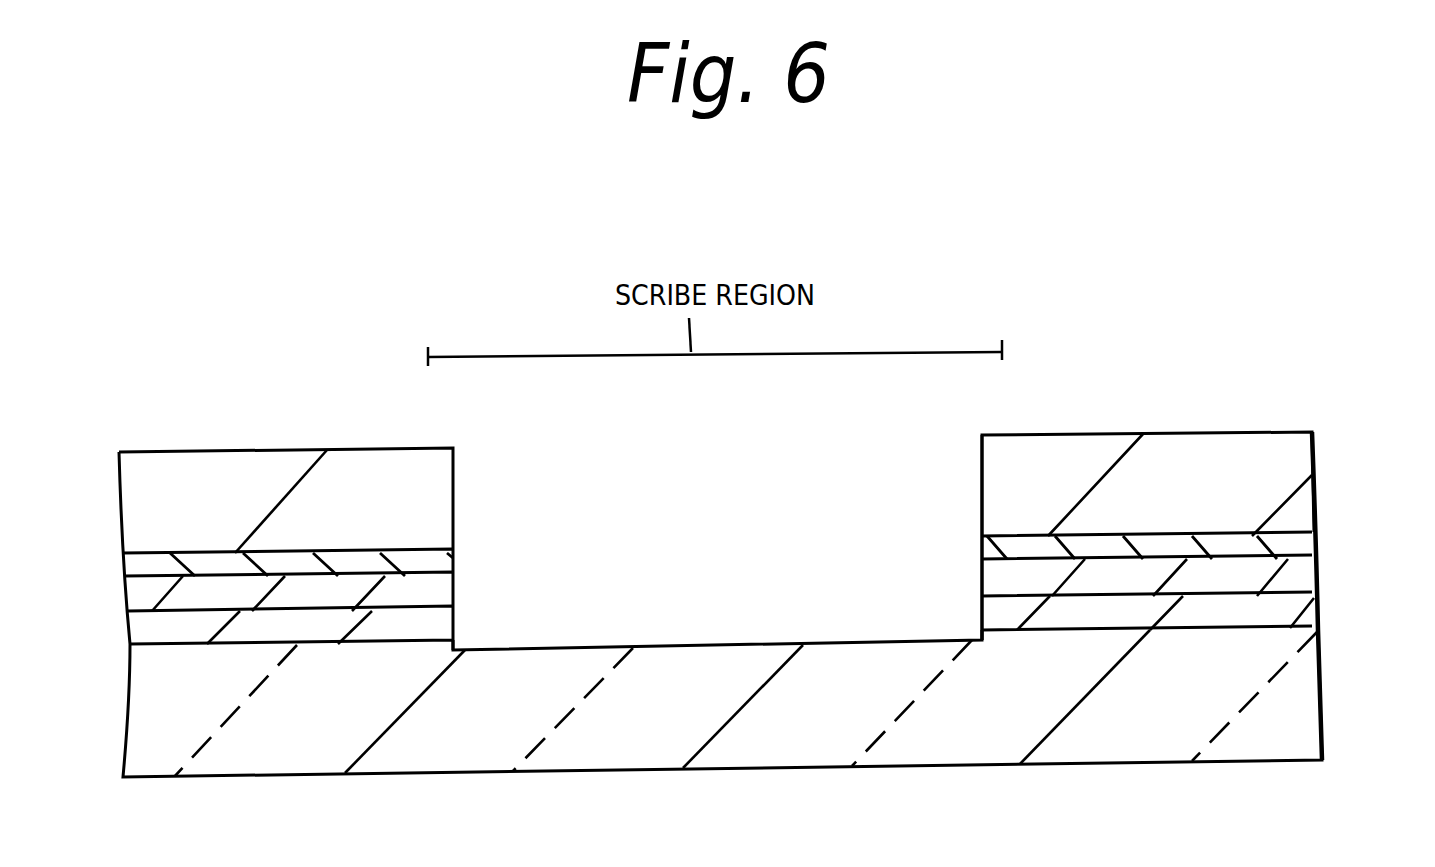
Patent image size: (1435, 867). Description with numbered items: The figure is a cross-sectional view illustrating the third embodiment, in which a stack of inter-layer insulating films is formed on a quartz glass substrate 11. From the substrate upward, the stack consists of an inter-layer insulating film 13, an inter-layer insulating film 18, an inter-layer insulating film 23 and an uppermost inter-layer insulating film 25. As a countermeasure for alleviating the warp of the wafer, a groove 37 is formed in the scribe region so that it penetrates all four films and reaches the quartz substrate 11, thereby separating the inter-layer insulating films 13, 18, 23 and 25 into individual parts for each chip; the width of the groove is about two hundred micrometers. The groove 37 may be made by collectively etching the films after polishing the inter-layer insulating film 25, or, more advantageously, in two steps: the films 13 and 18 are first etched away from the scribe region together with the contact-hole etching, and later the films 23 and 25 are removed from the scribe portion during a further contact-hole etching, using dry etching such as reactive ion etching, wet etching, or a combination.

The quartz glass substrate 11 is at (1303, 708).
The inter-layer insulating film 13 is at (1303, 610).
The inter-layer insulating film 18 is at (1303, 577).
The inter-layer insulating film 23 is at (1303, 542).
The inter-layer insulating film 25 is at (1303, 488).
The groove 37 is at (983, 553).